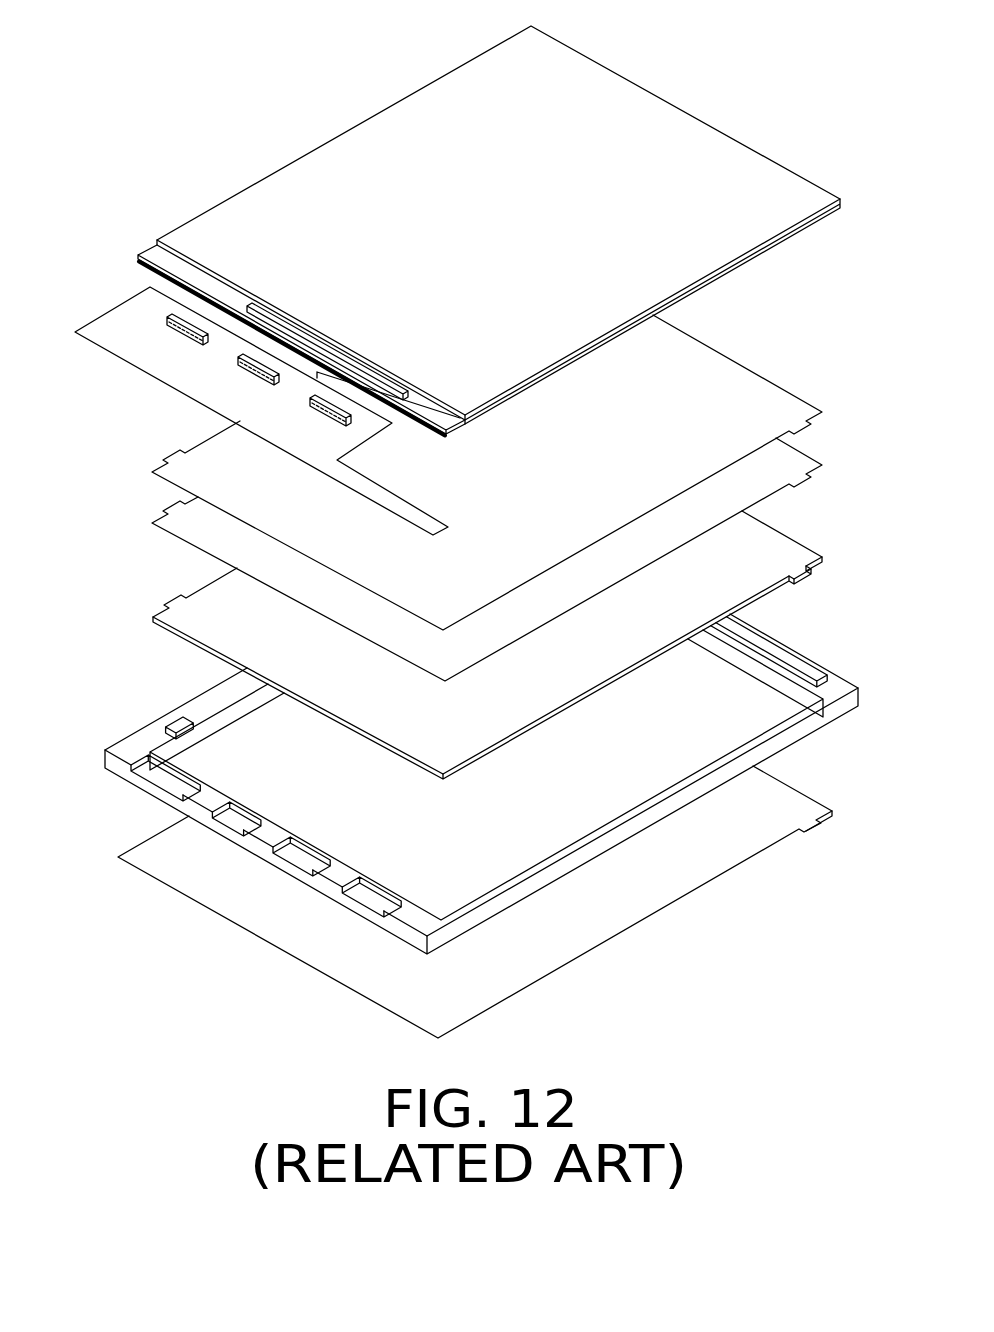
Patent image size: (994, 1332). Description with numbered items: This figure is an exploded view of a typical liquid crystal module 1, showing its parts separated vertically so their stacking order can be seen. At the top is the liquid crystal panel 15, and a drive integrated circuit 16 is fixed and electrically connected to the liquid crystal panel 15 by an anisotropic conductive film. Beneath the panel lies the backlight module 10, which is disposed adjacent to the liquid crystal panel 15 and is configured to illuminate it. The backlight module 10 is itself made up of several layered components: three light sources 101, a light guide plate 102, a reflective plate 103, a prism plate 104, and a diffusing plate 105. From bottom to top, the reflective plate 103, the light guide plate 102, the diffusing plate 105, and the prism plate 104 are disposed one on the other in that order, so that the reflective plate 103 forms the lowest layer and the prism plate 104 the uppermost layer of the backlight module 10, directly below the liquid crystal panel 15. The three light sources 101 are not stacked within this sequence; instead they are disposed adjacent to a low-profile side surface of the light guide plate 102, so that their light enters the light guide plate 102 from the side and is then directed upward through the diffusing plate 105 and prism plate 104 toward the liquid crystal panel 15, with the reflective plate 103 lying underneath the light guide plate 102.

The liquid crystal module 1 is at (351, 52).
The backlight module 10 is at (63, 387).
The liquid crystal panel 15 is at (757, 178).
The drive integrated circuit (IC) 16 is at (292, 330).
The light sources 101 is at (187, 334).
The light guide plate 102 is at (200, 603).
The reflective plate 103 is at (210, 855).
The prism plate 104 is at (188, 468).
The diffusing plate 105 is at (188, 517).